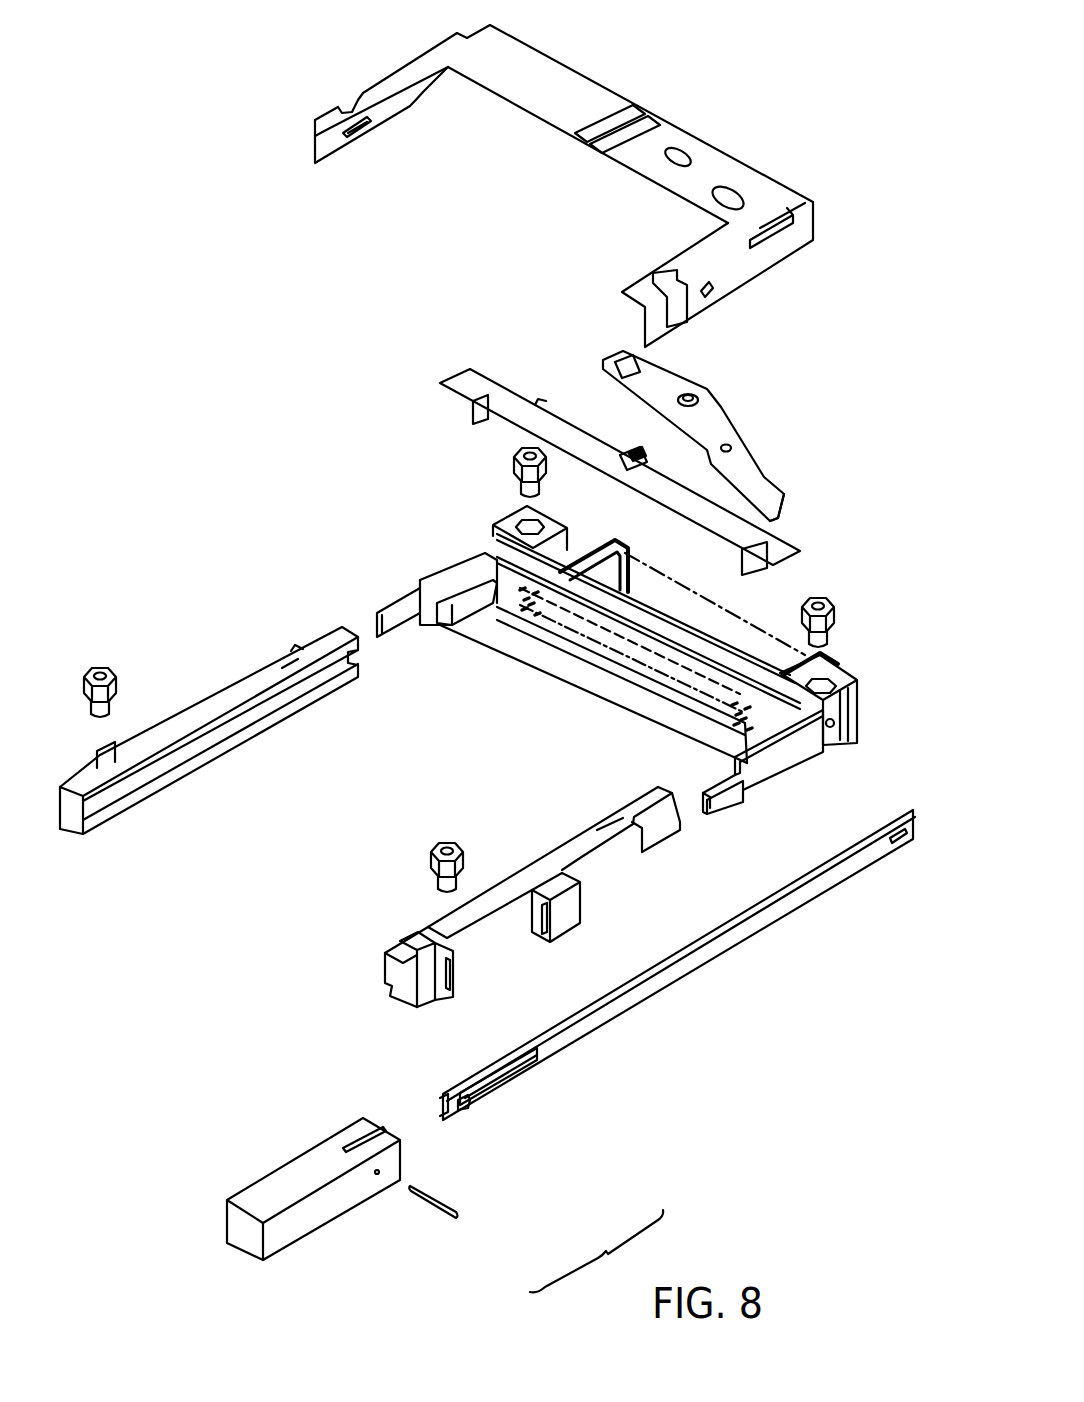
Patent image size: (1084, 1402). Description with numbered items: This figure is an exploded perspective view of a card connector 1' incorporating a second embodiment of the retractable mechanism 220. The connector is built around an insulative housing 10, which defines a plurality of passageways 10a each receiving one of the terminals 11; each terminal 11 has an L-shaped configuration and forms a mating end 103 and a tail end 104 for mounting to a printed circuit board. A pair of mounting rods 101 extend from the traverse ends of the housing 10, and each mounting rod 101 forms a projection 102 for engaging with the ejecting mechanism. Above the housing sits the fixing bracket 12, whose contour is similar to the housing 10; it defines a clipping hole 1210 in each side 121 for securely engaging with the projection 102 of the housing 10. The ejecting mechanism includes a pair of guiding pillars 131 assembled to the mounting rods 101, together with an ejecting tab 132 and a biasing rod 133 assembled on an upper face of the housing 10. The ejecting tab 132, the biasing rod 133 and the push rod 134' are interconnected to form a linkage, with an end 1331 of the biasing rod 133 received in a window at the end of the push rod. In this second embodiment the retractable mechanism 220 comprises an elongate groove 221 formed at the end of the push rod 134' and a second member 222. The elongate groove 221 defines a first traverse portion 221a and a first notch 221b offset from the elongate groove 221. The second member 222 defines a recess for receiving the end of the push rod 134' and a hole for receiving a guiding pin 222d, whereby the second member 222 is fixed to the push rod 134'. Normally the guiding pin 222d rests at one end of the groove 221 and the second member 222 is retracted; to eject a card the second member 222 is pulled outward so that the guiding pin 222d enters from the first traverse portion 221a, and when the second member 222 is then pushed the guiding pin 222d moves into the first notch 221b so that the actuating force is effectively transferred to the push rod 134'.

The drive bracket assembly 1' is at (167, 260).
The fixing bracket 12 is at (710, 170).
The side of fixing bracket 121 is at (758, 257).
The clipping hole 1210 is at (705, 292).
The ejecting tab 132 is at (558, 430).
The biasing rod 133 is at (707, 447).
The end of biasing rod 1331 is at (788, 515).
The insulative housing 10 is at (832, 673).
The passageways 10a is at (607, 653).
The mounting rods 101 is at (437, 573).
The projection 102 is at (707, 810).
The mating end 103 is at (523, 622).
The tail end 104 is at (552, 560).
The terminals 11 is at (630, 590).
The guiding pillars 131 is at (242, 688).
The push rod 134' is at (679, 965).
The elongate groove 221 is at (527, 1053).
The first traverse portion 221a is at (440, 1103).
The first notch 221b is at (473, 1107).
The second member 222 is at (285, 1232).
The guiding pin 222d is at (427, 1207).
The retractable mechanism 220 is at (596, 1251).